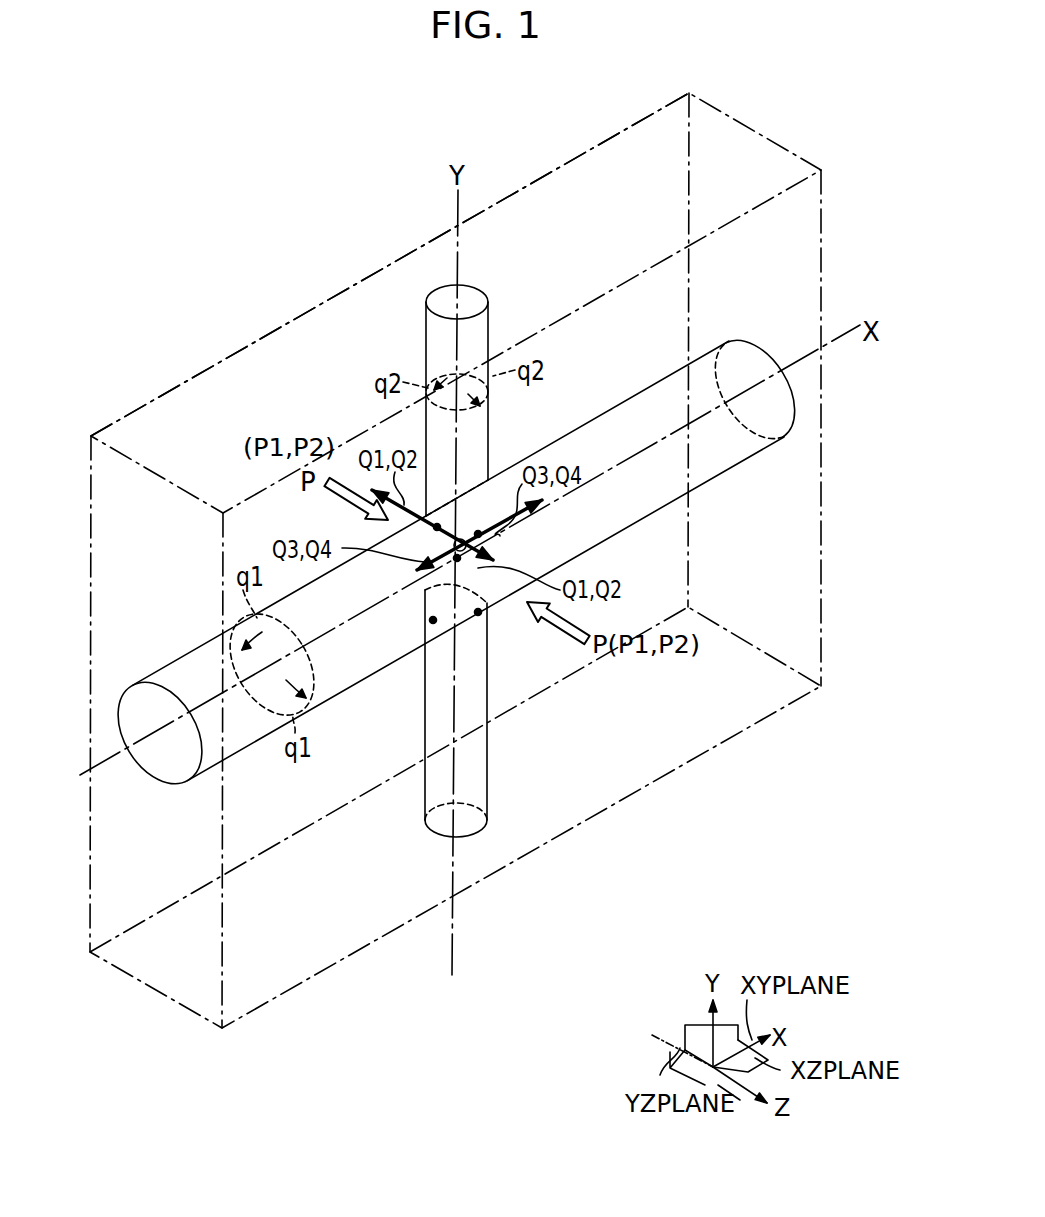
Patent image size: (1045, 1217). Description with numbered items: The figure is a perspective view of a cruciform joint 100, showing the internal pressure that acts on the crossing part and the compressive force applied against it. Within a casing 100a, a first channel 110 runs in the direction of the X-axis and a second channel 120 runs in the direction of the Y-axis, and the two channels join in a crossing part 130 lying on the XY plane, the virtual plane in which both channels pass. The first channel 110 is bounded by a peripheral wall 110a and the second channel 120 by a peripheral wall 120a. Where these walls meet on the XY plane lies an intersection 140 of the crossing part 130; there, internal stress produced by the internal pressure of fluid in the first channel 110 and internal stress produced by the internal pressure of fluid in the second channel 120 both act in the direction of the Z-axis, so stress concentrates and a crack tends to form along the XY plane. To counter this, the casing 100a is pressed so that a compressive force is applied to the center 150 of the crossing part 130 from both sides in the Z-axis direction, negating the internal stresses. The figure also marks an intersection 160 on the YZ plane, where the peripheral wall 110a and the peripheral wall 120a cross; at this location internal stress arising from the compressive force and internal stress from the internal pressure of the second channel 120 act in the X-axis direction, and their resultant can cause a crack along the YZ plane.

The cruciform joint 100 is at (248, 202).
The casing 100a is at (232, 392).
The first channel 110 is at (712, 492).
The peripheral wall of the first channel 110a is at (178, 675).
The second channel 120 is at (482, 333).
The peripheral wall of the second channel 120a is at (477, 763).
The crossing part 130 is at (512, 548).
The intersection 140 is at (430, 546).
The center of the crossing part 150 is at (432, 614).
The intersection on the YZ plane 160 is at (481, 526).